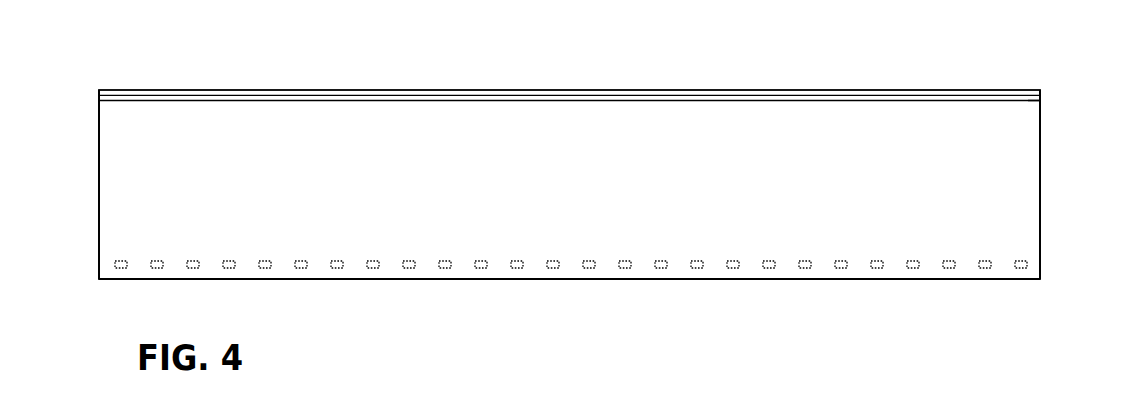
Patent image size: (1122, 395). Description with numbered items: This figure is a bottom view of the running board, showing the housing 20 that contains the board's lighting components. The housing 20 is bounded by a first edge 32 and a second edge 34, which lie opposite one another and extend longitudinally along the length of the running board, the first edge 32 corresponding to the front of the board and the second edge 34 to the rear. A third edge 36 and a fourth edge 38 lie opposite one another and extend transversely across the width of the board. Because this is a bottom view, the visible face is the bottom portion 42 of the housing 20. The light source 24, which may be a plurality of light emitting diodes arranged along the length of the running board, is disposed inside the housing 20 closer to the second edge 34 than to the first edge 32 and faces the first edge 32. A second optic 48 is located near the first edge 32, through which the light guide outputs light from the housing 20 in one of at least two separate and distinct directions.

The housing 20 is at (884, 67).
The light source 24 is at (117, 265).
The first edge 32 is at (677, 90).
The second edge 34 is at (655, 280).
The third edge 36 is at (99, 152).
The fourth edge 38 is at (1040, 177).
The bottom portion 42 is at (491, 178).
The second optic 48 is at (1028, 99).